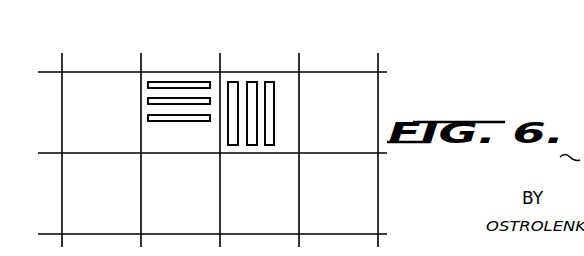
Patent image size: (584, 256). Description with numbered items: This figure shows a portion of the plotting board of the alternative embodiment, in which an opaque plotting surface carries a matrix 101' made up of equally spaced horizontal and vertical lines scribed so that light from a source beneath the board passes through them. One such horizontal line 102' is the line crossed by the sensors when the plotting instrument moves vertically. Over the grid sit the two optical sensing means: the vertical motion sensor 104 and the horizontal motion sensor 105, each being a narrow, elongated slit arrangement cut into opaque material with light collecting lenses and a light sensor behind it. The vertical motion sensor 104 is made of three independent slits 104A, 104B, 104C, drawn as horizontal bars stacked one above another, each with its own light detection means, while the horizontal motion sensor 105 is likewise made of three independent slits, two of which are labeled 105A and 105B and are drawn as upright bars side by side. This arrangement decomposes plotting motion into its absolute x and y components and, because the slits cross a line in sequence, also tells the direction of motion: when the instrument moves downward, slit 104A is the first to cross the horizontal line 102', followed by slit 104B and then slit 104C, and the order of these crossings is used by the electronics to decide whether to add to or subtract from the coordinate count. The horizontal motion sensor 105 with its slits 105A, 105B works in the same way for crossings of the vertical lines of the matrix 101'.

The matrix 101' is at (212, 150).
The horizontal line 102' is at (181, 179).
The vertical motion sensor 104 is at (141, 102).
The slit 104A is at (203, 123).
The slit 104B is at (167, 105).
The slit 104C is at (172, 81).
The horizontal motion sensor 105 is at (257, 69).
The slit 105A is at (238, 81).
The slit 105B is at (257, 102).